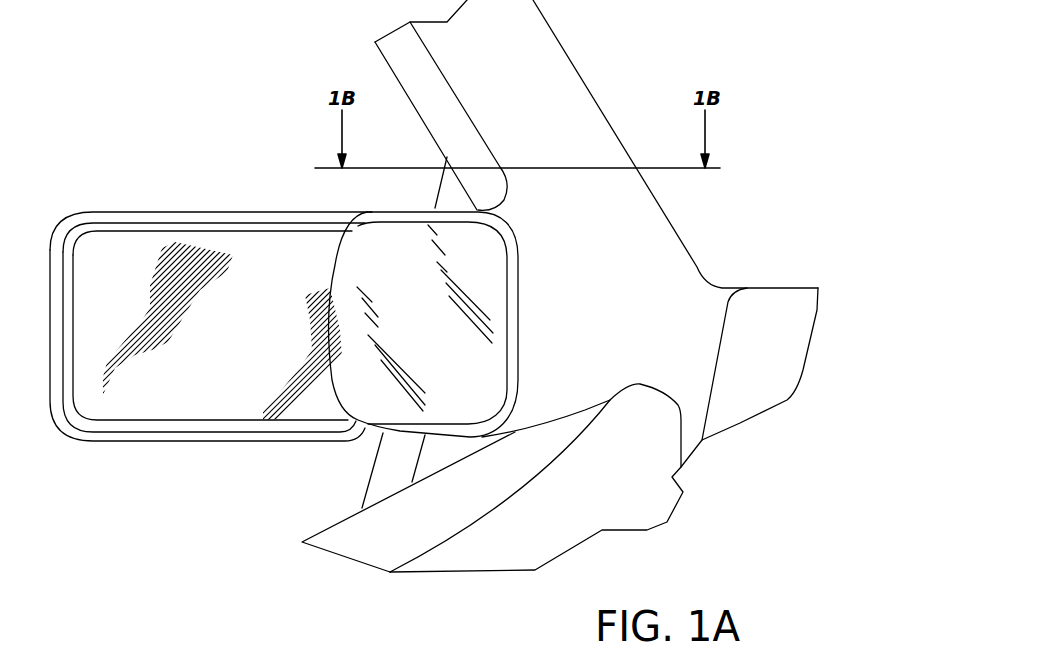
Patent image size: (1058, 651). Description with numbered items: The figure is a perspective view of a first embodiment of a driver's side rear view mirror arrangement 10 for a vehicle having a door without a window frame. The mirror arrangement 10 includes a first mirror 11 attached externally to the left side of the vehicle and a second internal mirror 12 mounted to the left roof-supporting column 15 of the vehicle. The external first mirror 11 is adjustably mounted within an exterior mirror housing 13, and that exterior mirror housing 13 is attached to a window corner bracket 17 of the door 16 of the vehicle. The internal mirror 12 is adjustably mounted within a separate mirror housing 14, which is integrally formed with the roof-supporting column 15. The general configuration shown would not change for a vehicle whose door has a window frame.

The side rear view mirror arrangement 10 is at (250, 152).
The first mirror 11 is at (202, 403).
The second internal mirror 12 is at (492, 331).
The exterior mirror housing 13 is at (253, 211).
The mirror housing 14 is at (537, 422).
The roof-supporting column 15 is at (578, 103).
The door 16 is at (348, 532).
The window corner bracket 17 is at (448, 193).